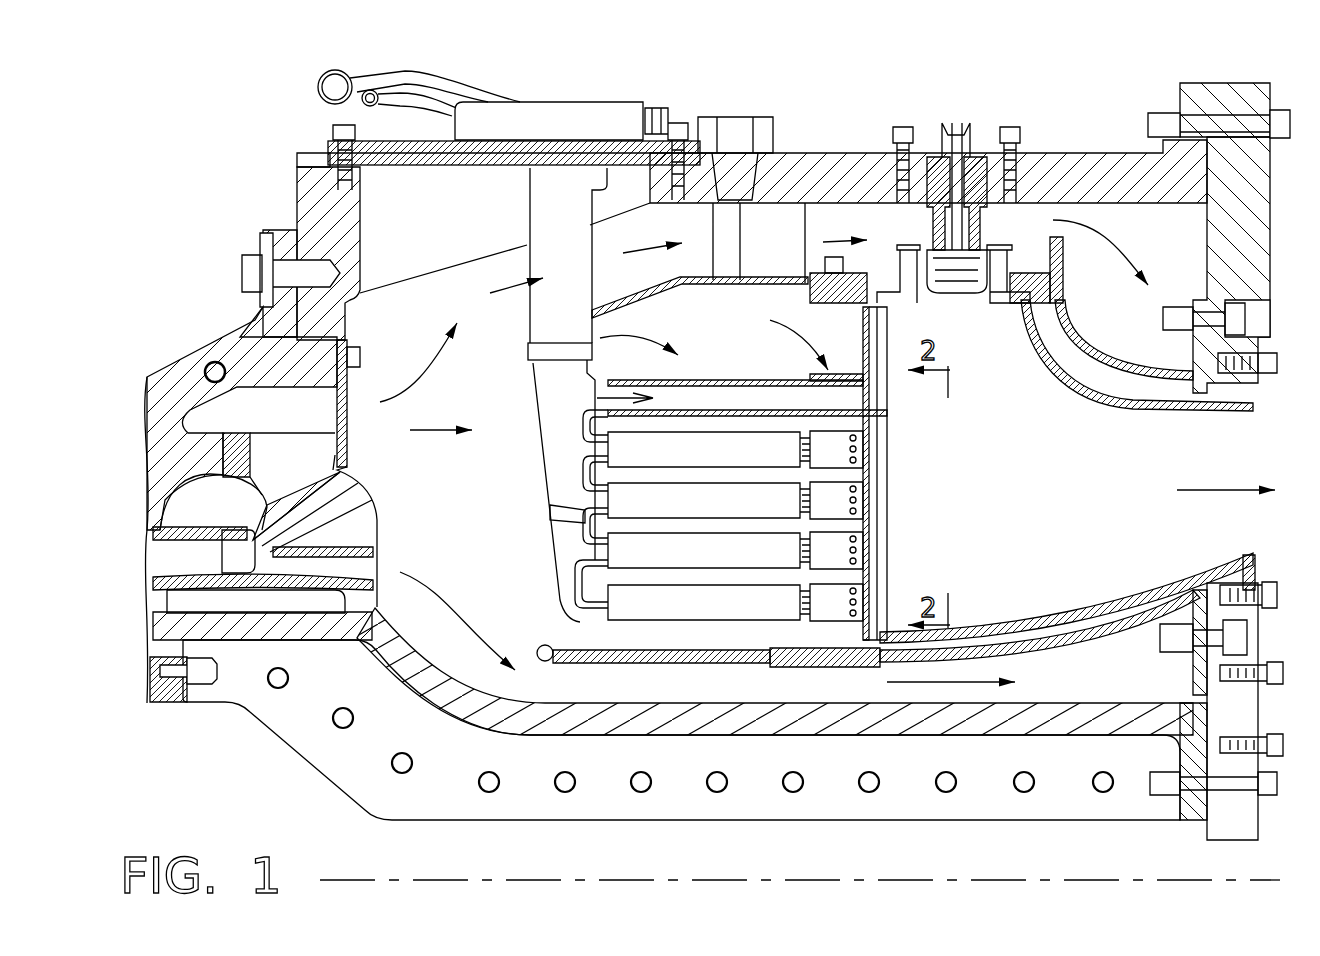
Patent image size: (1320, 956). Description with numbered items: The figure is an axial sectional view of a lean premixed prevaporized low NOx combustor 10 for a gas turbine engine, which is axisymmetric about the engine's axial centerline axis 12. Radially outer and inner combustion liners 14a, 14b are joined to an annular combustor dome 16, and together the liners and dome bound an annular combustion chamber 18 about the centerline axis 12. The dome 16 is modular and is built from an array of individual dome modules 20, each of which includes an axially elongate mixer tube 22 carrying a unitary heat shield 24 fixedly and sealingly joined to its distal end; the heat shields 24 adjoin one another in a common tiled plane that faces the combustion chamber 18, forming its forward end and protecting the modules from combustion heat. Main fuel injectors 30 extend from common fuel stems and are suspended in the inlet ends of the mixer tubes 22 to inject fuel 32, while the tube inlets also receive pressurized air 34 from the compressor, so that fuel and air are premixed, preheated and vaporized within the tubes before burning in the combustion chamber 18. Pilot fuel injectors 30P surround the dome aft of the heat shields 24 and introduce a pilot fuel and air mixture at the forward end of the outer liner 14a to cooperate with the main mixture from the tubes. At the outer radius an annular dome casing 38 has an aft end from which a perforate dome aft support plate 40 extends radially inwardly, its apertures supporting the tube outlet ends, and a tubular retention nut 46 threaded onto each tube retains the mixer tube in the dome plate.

The LPP low NOx combustor 10 is at (1102, 76).
The axial centerline axis 12 is at (345, 873).
The outer combustion liner 14a is at (1115, 400).
The inner combustion liner 14b is at (1173, 585).
The annular combustor dome 16 is at (905, 545).
The annular combustion chamber 18 is at (1081, 576).
The dome module 20 is at (768, 375).
The mixer tube 22 is at (735, 526).
The heat shield 24 is at (888, 418).
The main fuel injector 30 is at (635, 393).
The pilot fuel injector 30P is at (990, 135).
The fuel 32 is at (325, 96).
The pressurized air 34 is at (378, 535).
The annular dome casing 38 is at (680, 283).
The perforate dome aft support plate 40 is at (864, 340).
The tubular retention nut 46 is at (832, 615).